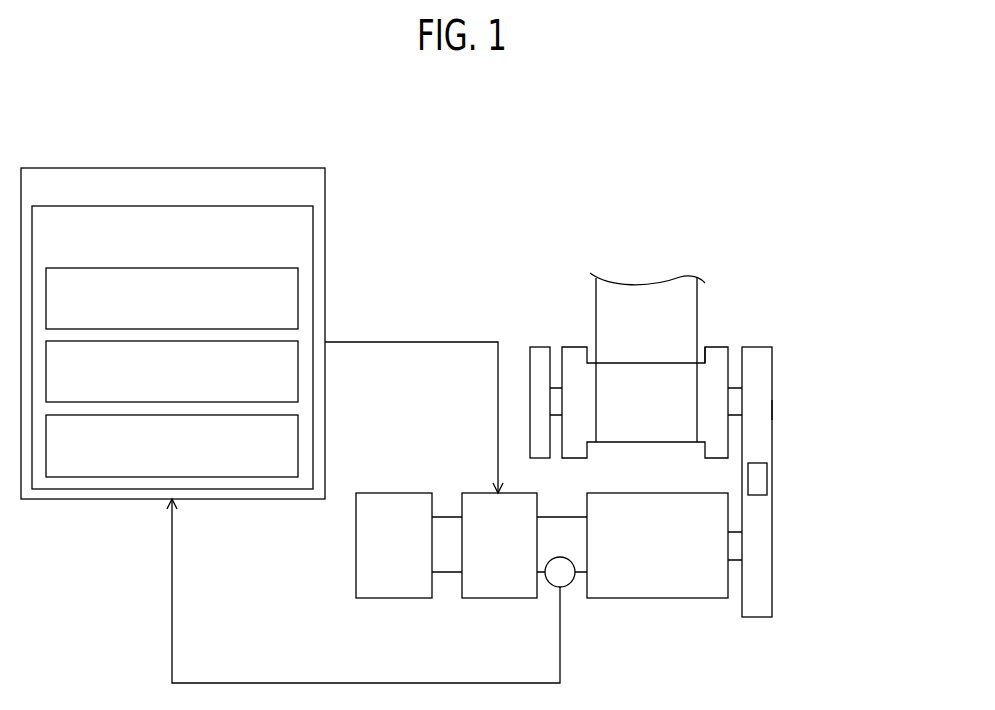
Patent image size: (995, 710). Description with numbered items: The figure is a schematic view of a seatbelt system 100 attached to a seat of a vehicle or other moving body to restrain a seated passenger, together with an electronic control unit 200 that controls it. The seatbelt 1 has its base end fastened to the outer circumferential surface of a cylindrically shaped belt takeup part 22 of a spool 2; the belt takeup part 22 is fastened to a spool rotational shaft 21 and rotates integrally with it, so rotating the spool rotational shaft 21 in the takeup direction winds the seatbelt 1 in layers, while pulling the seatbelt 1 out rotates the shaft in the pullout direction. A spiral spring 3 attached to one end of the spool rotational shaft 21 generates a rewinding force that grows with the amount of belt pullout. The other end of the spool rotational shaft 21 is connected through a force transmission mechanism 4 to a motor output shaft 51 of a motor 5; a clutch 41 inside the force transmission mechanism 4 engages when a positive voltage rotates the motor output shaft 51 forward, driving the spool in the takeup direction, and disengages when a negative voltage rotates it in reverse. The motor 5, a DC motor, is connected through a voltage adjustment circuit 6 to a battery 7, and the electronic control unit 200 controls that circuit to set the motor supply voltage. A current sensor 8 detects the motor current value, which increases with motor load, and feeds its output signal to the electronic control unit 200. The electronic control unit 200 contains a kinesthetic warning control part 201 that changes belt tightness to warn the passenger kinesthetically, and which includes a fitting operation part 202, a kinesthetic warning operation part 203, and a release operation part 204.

The seatbelt system 100 is at (818, 253).
The seatbelt 1 is at (697, 292).
The spool 2 is at (716, 347).
The spool rotational shaft 21 is at (737, 388).
The belt takeup part 22 is at (708, 346).
The spiral spring 3 is at (540, 347).
The force transmission mechanism 4 is at (772, 477).
The clutch 41 is at (757, 463).
The motor 5 is at (652, 598).
The motor output shaft 51 is at (732, 562).
The voltage adjustment circuit 6 is at (498, 598).
The battery 7 is at (389, 598).
The current sensor 8 is at (571, 584).
The electronic control unit 200 is at (175, 168).
The kinesthetic warning control part 201 is at (313, 250).
The fitting operation part 202 is at (298, 295).
The kinesthetic warning operation part 203 is at (298, 370).
The release operation part 204 is at (298, 447).